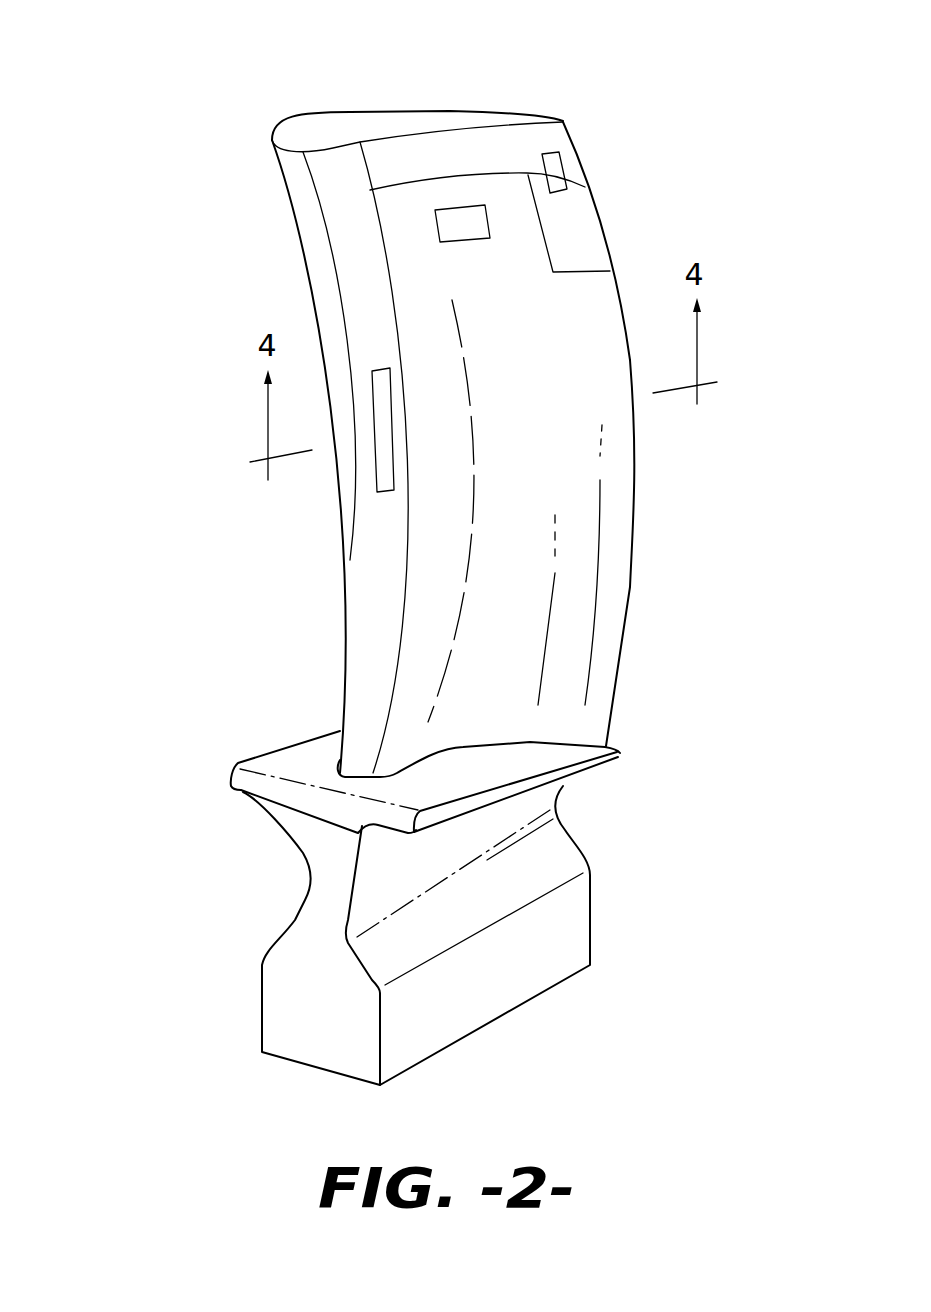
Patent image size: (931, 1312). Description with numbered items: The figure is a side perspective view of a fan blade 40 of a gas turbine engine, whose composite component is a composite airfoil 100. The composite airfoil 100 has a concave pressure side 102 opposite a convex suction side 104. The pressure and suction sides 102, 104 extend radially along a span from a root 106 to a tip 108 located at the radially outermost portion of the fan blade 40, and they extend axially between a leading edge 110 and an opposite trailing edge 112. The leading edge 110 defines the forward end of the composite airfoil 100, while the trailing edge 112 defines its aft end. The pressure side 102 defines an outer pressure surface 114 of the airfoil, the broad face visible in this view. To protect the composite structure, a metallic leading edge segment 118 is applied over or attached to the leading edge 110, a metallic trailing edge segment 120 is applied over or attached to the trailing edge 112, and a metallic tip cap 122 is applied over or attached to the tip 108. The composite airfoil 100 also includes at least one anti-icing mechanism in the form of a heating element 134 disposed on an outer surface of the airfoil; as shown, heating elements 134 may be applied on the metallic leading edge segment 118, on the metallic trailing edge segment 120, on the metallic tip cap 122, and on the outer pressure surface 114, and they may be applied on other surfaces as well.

The fan blade 40 is at (222, 88).
The composite airfoil 100 is at (471, 399).
The pressure side 102 is at (582, 584).
The suction side 104 is at (376, 86).
The root 106 is at (640, 752).
The tip 108 is at (585, 118).
The leading edge 110 is at (268, 210).
The trailing edge 112 is at (658, 502).
The outer pressure surface 114 is at (535, 417).
The metallic leading edge segment 118 is at (372, 657).
The metallic trailing edge segment 120 is at (582, 228).
The metallic tip cap 122 is at (480, 140).
The heating element 134 is at (572, 184).